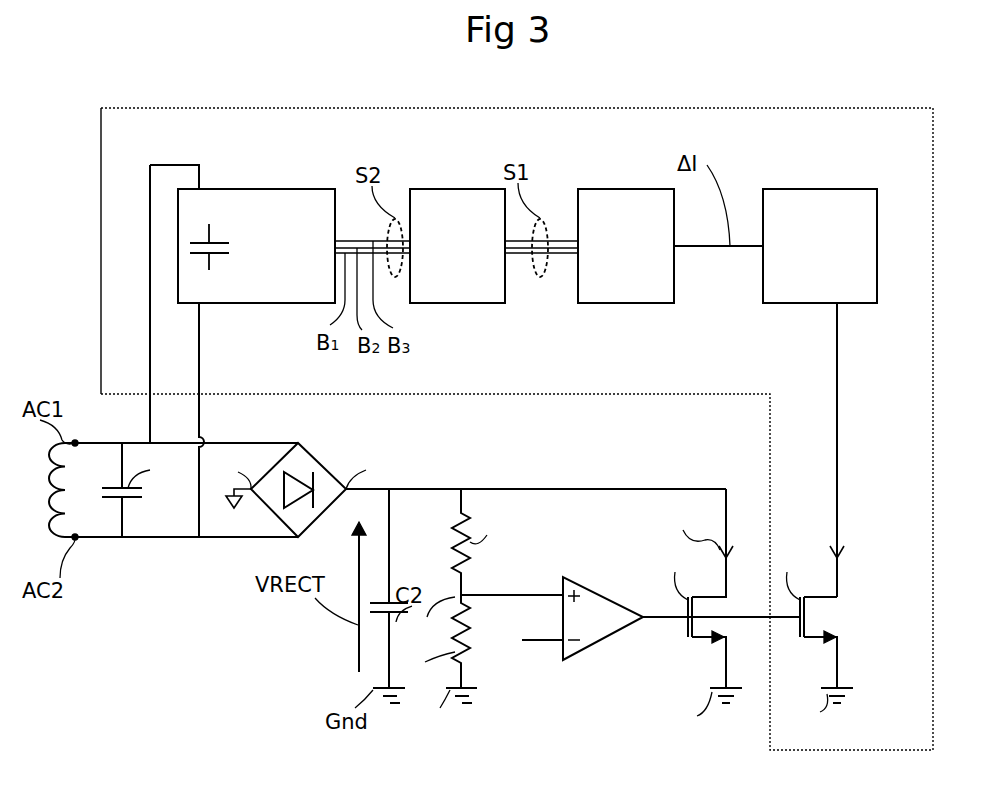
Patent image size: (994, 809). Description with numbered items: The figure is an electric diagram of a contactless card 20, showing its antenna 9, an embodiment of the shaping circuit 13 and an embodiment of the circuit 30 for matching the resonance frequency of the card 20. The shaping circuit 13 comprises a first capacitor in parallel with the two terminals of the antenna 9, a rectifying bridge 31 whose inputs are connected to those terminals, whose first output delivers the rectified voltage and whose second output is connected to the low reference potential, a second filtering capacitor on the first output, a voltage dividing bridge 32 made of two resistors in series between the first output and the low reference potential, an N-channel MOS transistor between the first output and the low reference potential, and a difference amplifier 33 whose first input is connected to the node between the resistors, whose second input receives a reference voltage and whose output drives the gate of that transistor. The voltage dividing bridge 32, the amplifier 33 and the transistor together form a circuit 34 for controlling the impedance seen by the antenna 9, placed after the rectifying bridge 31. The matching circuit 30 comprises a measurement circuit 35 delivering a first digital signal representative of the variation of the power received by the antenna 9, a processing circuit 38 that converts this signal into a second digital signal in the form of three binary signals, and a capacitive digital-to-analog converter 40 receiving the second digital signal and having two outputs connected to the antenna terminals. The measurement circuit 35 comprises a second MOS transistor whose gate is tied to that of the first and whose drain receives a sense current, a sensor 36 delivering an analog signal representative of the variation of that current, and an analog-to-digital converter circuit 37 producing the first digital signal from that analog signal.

The antenna 9 is at (50, 480).
The shaping circuit 13 is at (196, 553).
The card 20 is at (92, 158).
The resonance frequency matching circuit 30 is at (610, 108).
The rectifying bridge 31 is at (322, 466).
The voltage dividing bridge 32 is at (485, 574).
The difference amplifier 33 is at (628, 576).
The circuit for controlling the impedance seen by the antenna 34 is at (566, 686).
The measurement circuit 35 is at (890, 186).
The sensor 36 is at (796, 189).
The analog-to-digital converter circuit 37 is at (642, 189).
The processing circuit 38 is at (480, 189).
The capacitive digital-to-analog converter 40 is at (312, 189).